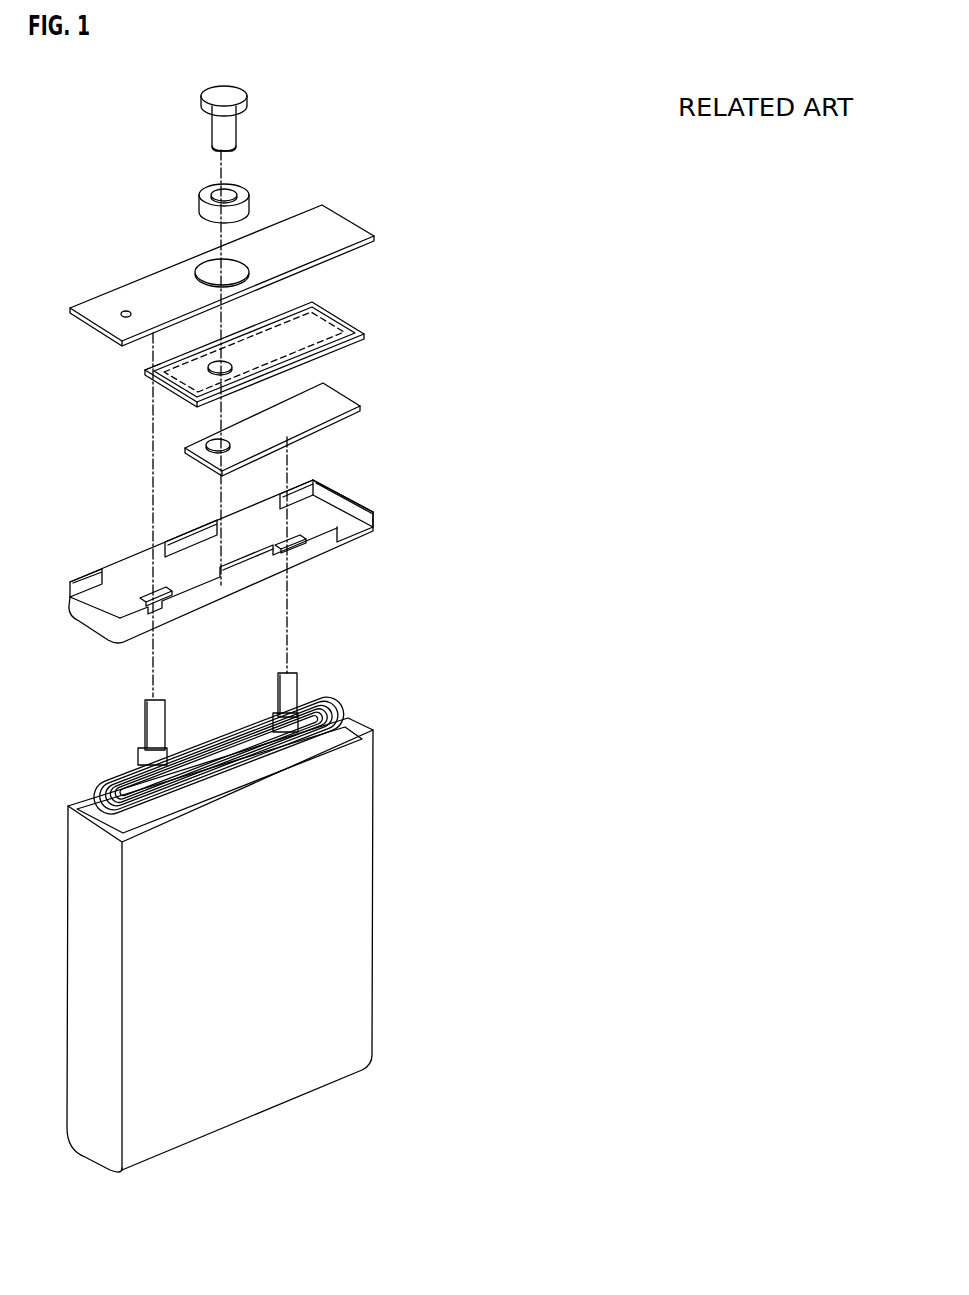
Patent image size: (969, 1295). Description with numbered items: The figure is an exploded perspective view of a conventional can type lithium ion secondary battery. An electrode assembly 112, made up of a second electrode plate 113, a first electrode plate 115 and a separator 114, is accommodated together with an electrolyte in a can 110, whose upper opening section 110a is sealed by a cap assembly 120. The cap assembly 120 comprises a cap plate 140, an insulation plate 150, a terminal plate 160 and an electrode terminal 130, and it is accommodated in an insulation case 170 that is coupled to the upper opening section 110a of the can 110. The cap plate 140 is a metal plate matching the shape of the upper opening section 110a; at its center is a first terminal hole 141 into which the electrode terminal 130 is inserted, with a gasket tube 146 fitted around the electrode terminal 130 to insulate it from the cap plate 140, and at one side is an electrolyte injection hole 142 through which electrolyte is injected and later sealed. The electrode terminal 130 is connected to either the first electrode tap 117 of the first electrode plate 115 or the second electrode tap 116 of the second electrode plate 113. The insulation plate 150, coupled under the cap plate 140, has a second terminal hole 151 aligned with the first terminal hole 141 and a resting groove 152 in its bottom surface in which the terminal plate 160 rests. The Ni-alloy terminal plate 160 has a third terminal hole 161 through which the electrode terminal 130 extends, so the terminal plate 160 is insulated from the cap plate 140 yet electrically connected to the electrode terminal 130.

The can 110 is at (265, 936).
The upper opening section 110a is at (362, 722).
The electrode assembly 112 is at (253, 722).
The second electrode plate 113 is at (219, 755).
The separator 114 is at (218, 755).
The first electrode plate 115 is at (219, 755).
The second electrode tap 116 is at (143, 728).
The first electrode tap 117 is at (278, 698).
The cap assembly 120 is at (473, 75).
The electrode terminal 130 is at (235, 93).
The cap plate 140 is at (258, 266).
The first terminal hole 141 is at (212, 263).
The electrolyte injection hole 142 is at (124, 310).
The gasket tube 146 is at (205, 193).
The insulation plate 150 is at (263, 351).
The second terminal hole 151 is at (210, 370).
The resting groove 152 is at (150, 372).
The terminal plate 160 is at (289, 426).
The third terminal hole 161 is at (208, 452).
The insulation case 170 is at (142, 572).